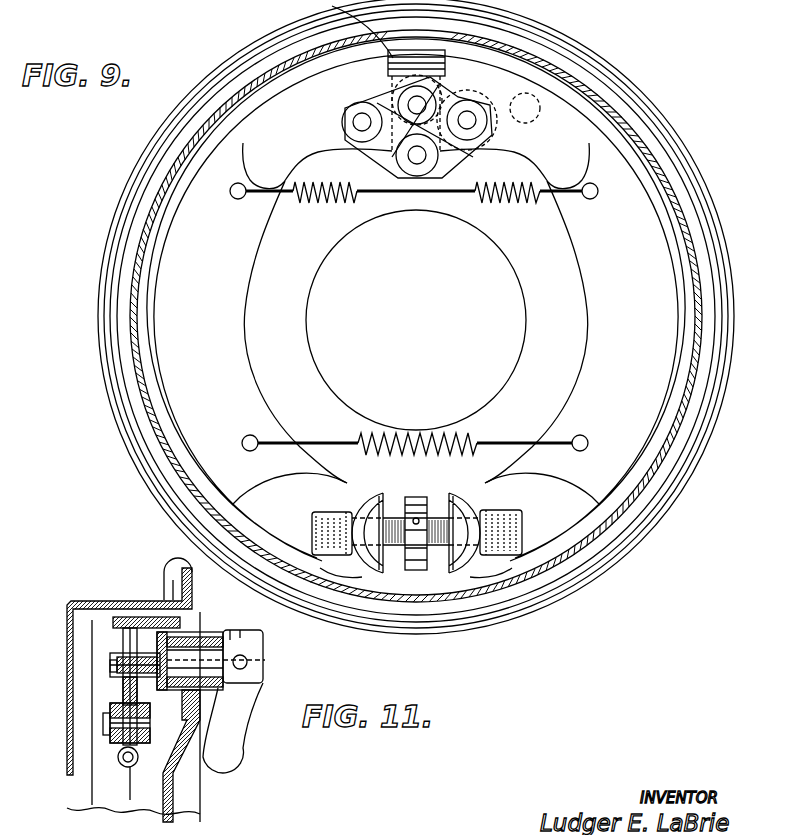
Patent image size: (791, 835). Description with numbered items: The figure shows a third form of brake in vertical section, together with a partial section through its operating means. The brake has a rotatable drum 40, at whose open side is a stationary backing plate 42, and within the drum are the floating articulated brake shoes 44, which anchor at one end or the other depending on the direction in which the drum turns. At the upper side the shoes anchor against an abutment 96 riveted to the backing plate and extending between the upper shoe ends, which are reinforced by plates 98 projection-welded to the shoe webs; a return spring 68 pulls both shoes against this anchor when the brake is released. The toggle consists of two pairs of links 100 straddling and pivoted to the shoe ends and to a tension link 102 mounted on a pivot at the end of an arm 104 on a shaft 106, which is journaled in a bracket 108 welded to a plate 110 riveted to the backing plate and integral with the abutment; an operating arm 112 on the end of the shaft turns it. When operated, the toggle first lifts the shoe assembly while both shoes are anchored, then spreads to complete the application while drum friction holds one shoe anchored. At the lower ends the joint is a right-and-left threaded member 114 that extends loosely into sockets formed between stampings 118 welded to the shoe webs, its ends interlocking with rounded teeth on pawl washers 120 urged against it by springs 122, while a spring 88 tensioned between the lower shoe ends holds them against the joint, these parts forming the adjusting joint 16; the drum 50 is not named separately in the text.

In FIG. 9, the adjuster assembly 16 is at (409, 529).
In FIG. 9, the rotatable drum 40 is at (698, 290).
In FIG. 11, the rotatable drum 40 is at (78, 602).
In FIG. 9, the backing plate 42 is at (540, 397).
In FIG. 11, the backing plate 42 is at (180, 791).
In FIG. 9, the floating articulated brake shoes 44 is at (233, 343).
In FIG. 11, the floating articulated brake shoes 44 is at (105, 787).
In FIG. 9, the brake drum 50 is at (341, 29).
In FIG. 9, the return spring 68 is at (492, 202).
In FIG. 9, the spring 88 is at (362, 442).
In FIG. 11, the abutment 96 is at (137, 617).
In FIG. 9, the plates 98 is at (250, 167).
In FIG. 9, the links 100 is at (384, 148).
In FIG. 11, the links 100 is at (110, 737).
In FIG. 9, the tension link 102 is at (392, 92).
In FIG. 11, the tension link 102 is at (127, 700).
In FIG. 11, the arm 104 is at (160, 668).
In FIG. 9, the shaft 106 is at (500, 88).
In FIG. 11, the shaft 106 is at (210, 655).
In FIG. 11, the bracket 108 is at (215, 697).
In FIG. 11, the plate 110 is at (198, 713).
In FIG. 11, the operating arm 112 is at (248, 705).
In FIG. 9, the right-and-left threaded member 114 is at (433, 517).
In FIG. 9, the stampings 118 is at (248, 500).
In FIG. 9, the pawl washers 120 is at (343, 512).
In FIG. 9, the springs 122 is at (312, 520).